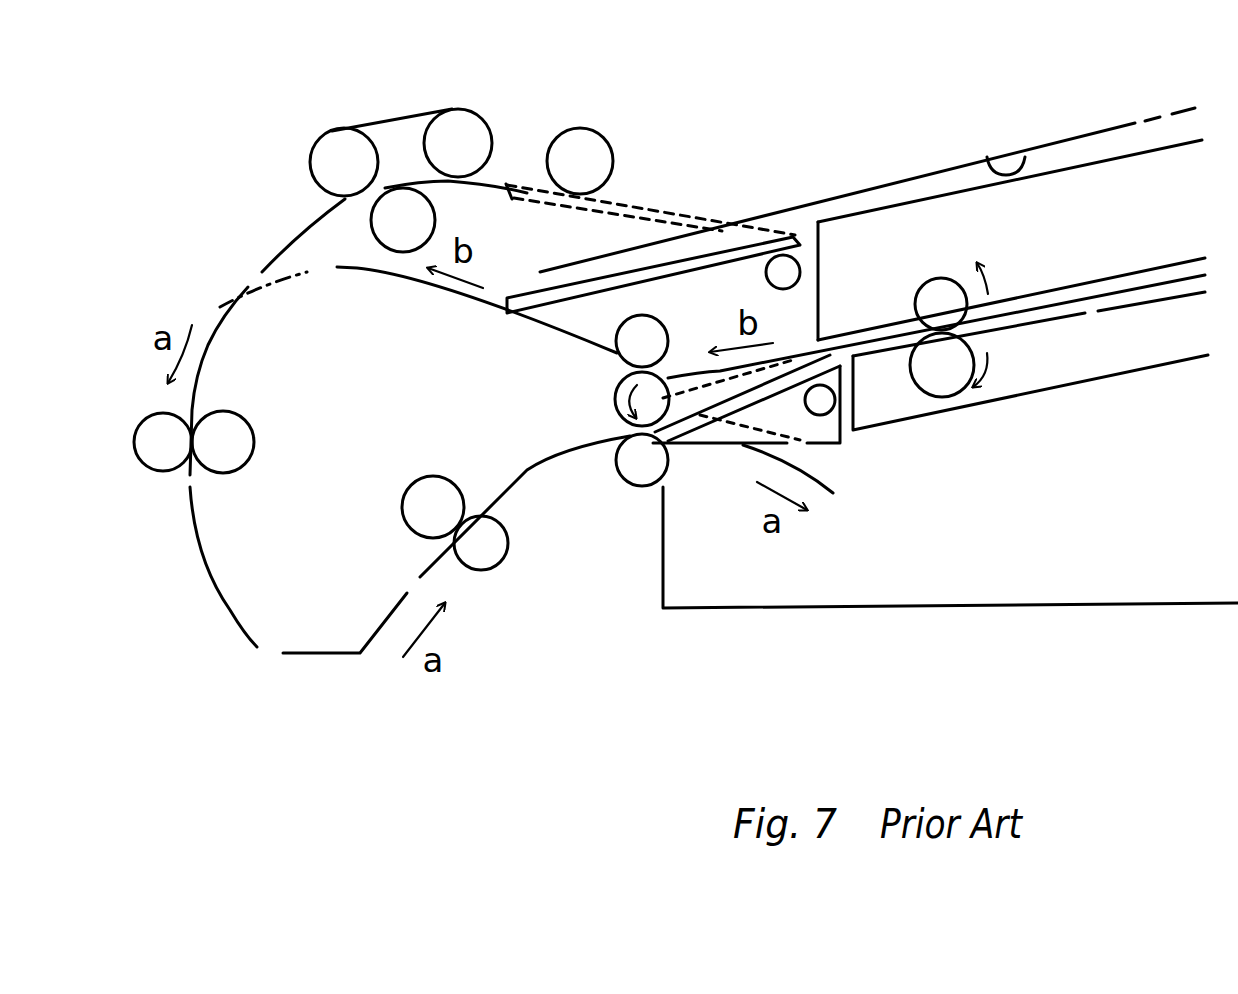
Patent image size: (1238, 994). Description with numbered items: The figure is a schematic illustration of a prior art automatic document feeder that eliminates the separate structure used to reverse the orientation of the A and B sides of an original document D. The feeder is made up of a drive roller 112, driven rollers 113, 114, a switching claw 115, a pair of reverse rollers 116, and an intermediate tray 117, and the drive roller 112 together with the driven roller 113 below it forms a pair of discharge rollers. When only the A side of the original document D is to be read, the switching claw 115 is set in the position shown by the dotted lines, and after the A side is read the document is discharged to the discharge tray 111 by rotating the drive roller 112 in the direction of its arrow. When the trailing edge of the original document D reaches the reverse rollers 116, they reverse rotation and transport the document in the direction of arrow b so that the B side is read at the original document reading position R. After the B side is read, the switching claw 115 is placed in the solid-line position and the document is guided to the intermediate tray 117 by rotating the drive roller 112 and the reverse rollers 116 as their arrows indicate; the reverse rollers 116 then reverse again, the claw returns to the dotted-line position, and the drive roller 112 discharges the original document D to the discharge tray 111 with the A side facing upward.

The discharge tray 111 is at (818, 608).
The drive roller 112 is at (613, 400).
The driven roller 113 is at (641, 492).
The driven roller 114 is at (672, 338).
The switching claw 115 is at (733, 430).
The reverse rollers 116 is at (923, 282).
The intermediate tray 117 is at (1100, 333).
The A side A is at (947, 167).
The B side B is at (1023, 157).
The original document D is at (948, 72).
The original document reading position R is at (310, 657).